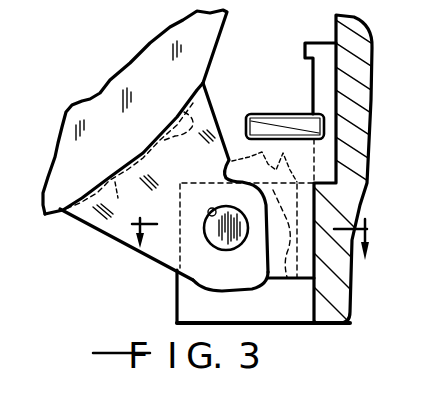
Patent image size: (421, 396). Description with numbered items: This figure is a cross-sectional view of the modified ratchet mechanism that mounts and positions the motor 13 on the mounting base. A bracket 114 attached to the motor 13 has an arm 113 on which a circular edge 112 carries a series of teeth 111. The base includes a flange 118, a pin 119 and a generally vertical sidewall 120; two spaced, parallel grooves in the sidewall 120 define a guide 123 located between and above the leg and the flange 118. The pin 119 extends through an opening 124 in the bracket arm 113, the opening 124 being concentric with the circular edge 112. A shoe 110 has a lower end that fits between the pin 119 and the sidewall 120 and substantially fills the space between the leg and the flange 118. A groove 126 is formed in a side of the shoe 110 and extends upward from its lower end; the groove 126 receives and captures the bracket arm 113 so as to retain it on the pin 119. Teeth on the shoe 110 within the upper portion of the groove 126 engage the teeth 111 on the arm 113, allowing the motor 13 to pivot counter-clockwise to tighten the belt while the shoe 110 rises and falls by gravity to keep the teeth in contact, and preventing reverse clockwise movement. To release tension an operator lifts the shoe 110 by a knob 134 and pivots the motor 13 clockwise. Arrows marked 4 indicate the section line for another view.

The motor 13 is at (231, 38).
The shoe 110 is at (242, 128).
The teeth 111 is at (278, 149).
The circular edge 112 is at (260, 288).
The arm 113 is at (157, 261).
The bracket 114 is at (93, 232).
The flange 118 is at (178, 300).
The pin 119 is at (213, 247).
The sidewall 120 is at (298, 325).
The guide 123 is at (307, 59).
The opening 124 is at (211, 209).
The groove 126 is at (291, 253).
The knob 134 is at (280, 114).
The section line 4- 4 is at (246, 243).